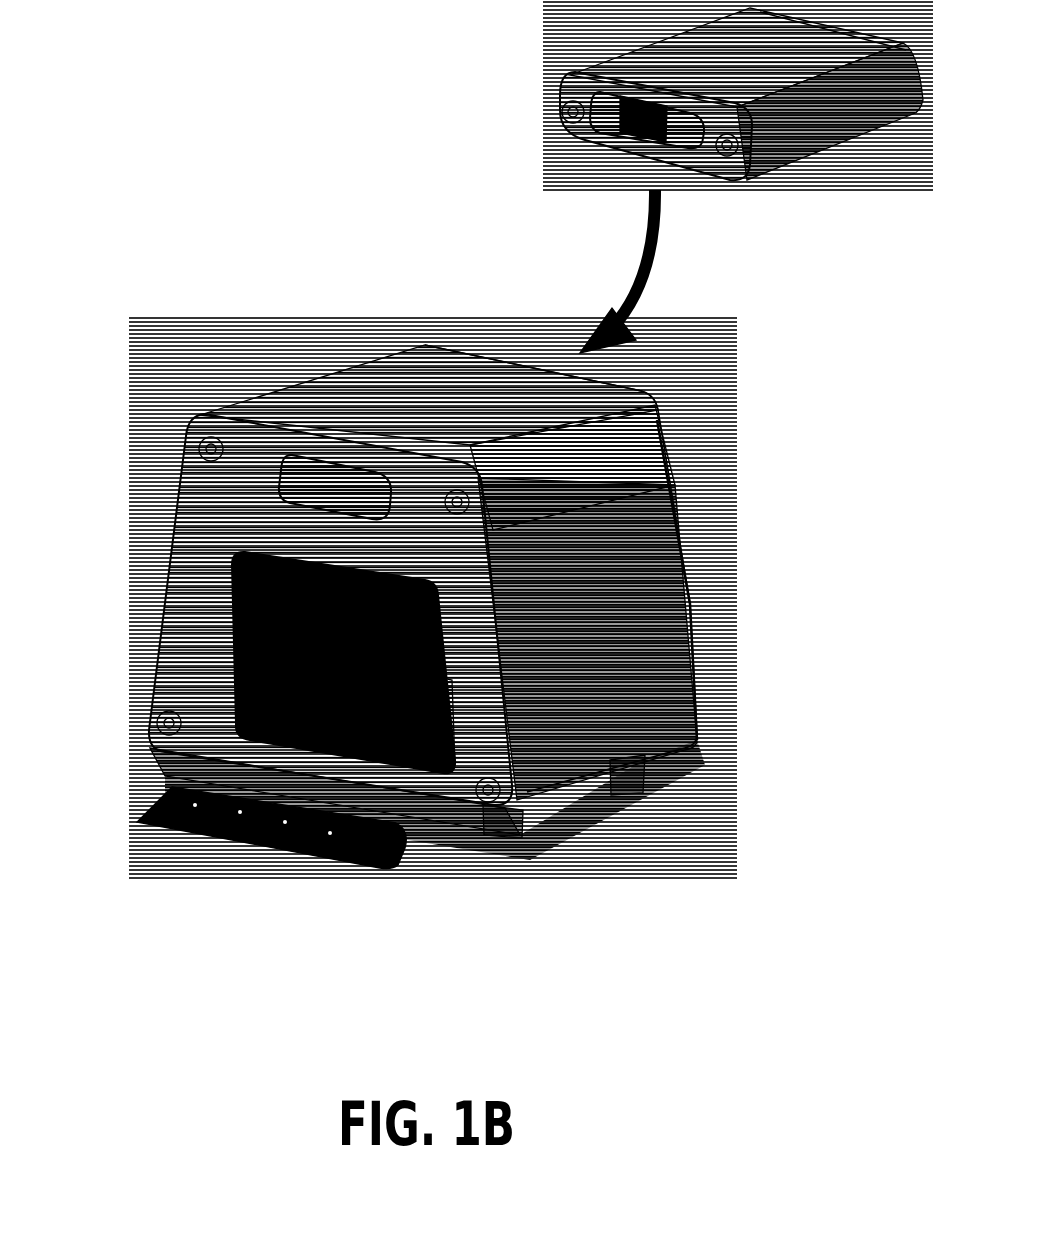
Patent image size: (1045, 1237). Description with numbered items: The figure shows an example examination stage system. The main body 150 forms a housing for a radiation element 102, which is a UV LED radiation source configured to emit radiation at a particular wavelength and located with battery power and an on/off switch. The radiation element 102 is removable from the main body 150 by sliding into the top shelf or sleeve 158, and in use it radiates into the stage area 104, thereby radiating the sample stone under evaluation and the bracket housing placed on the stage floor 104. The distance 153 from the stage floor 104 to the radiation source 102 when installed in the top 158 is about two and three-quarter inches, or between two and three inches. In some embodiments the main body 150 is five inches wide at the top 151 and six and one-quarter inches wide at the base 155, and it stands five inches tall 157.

The radiation element 102 is at (542, 35).
The stage floor 104 is at (350, 730).
The main body 150 is at (468, 633).
The top 151 is at (467, 467).
The distance 153 is at (387, 718).
The base 155 is at (490, 823).
The height 157 is at (637, 390).
The top shelf or sleeve 158 is at (279, 467).